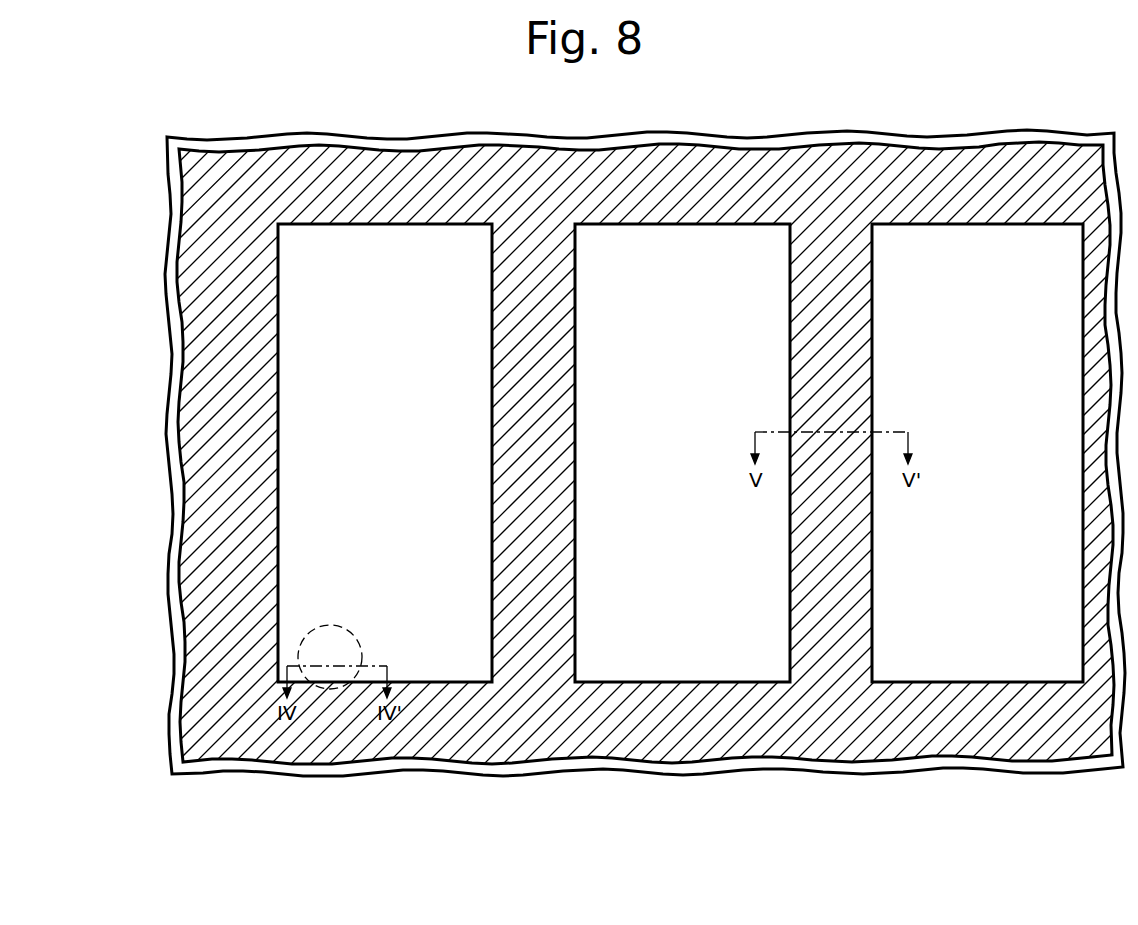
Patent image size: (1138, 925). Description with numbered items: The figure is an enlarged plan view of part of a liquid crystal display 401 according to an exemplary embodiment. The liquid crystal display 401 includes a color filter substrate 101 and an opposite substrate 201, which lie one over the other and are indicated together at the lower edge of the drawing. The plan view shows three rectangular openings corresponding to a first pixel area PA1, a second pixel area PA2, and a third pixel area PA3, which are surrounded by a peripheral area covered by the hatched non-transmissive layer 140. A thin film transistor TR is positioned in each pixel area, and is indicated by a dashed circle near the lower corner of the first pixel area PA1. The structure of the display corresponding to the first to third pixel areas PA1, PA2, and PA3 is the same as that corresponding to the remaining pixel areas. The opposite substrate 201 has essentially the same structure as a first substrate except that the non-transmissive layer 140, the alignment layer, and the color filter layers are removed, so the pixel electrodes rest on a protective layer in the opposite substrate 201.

The first non-transmissive layer 140 is at (840, 167).
The color filter substrate 101 is at (1047, 830).
The opposite substrate 201 is at (1027, 771).
The liquid crystal display 401 is at (645, 498).
The first pixel area PA1 is at (395, 341).
The second pixel area PA2 is at (686, 340).
The third pixel area PA3 is at (997, 338).
The thin film transistor TR is at (335, 620).